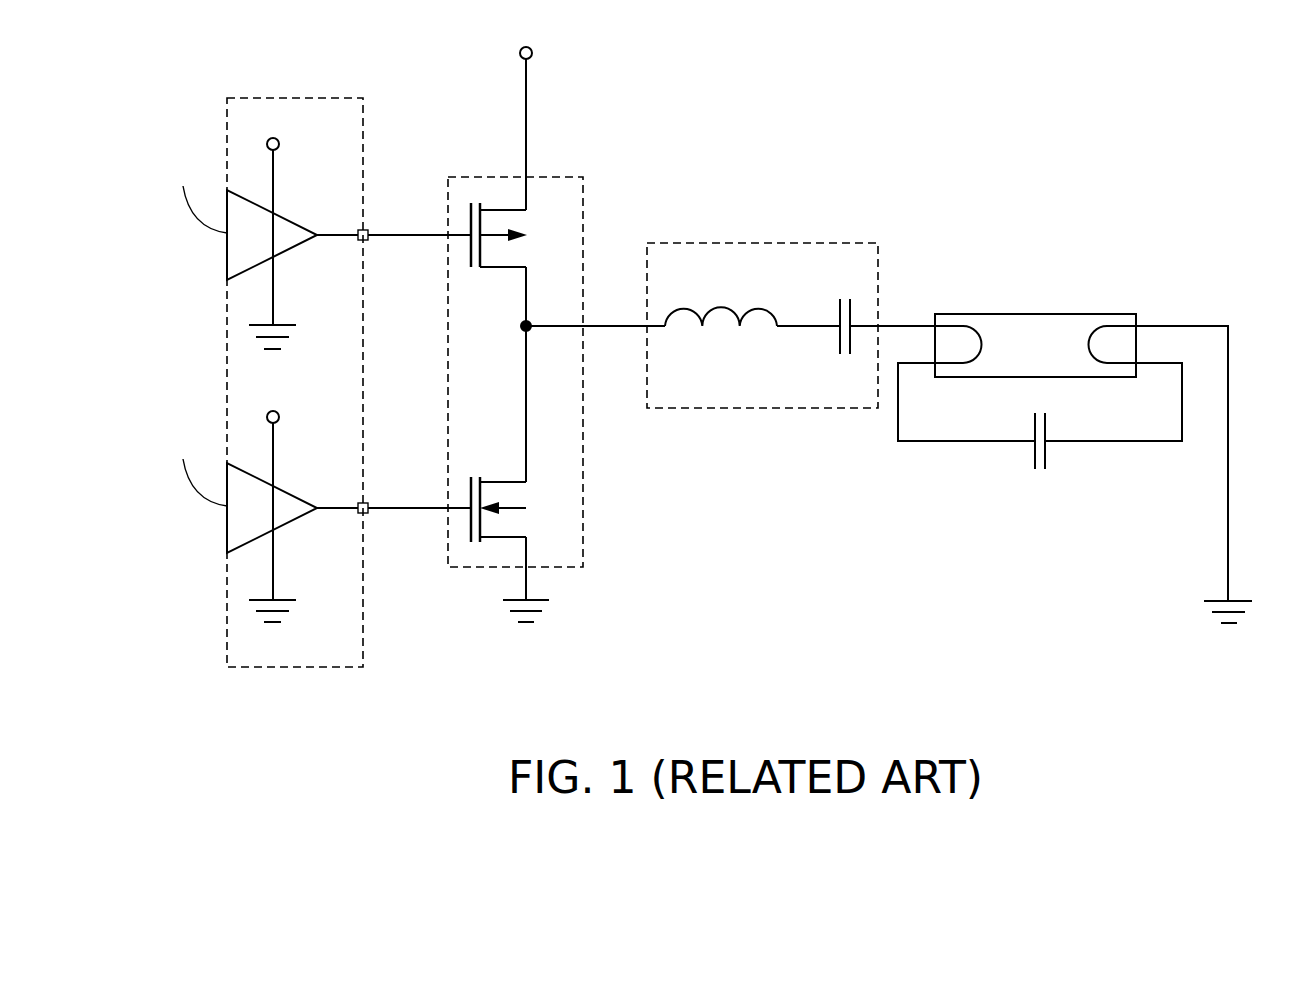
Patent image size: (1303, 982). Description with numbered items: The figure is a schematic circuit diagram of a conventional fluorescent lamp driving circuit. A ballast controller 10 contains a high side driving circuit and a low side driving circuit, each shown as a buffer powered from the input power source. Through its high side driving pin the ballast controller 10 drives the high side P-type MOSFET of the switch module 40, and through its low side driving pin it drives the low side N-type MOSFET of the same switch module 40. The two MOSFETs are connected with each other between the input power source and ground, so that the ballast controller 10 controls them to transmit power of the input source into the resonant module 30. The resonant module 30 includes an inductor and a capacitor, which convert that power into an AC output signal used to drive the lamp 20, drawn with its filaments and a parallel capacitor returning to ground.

The ballast controller 10 is at (366, 87).
The switch module 40 is at (576, 164).
The resonant module 30 is at (815, 224).
The lamp 20 is at (1007, 277).